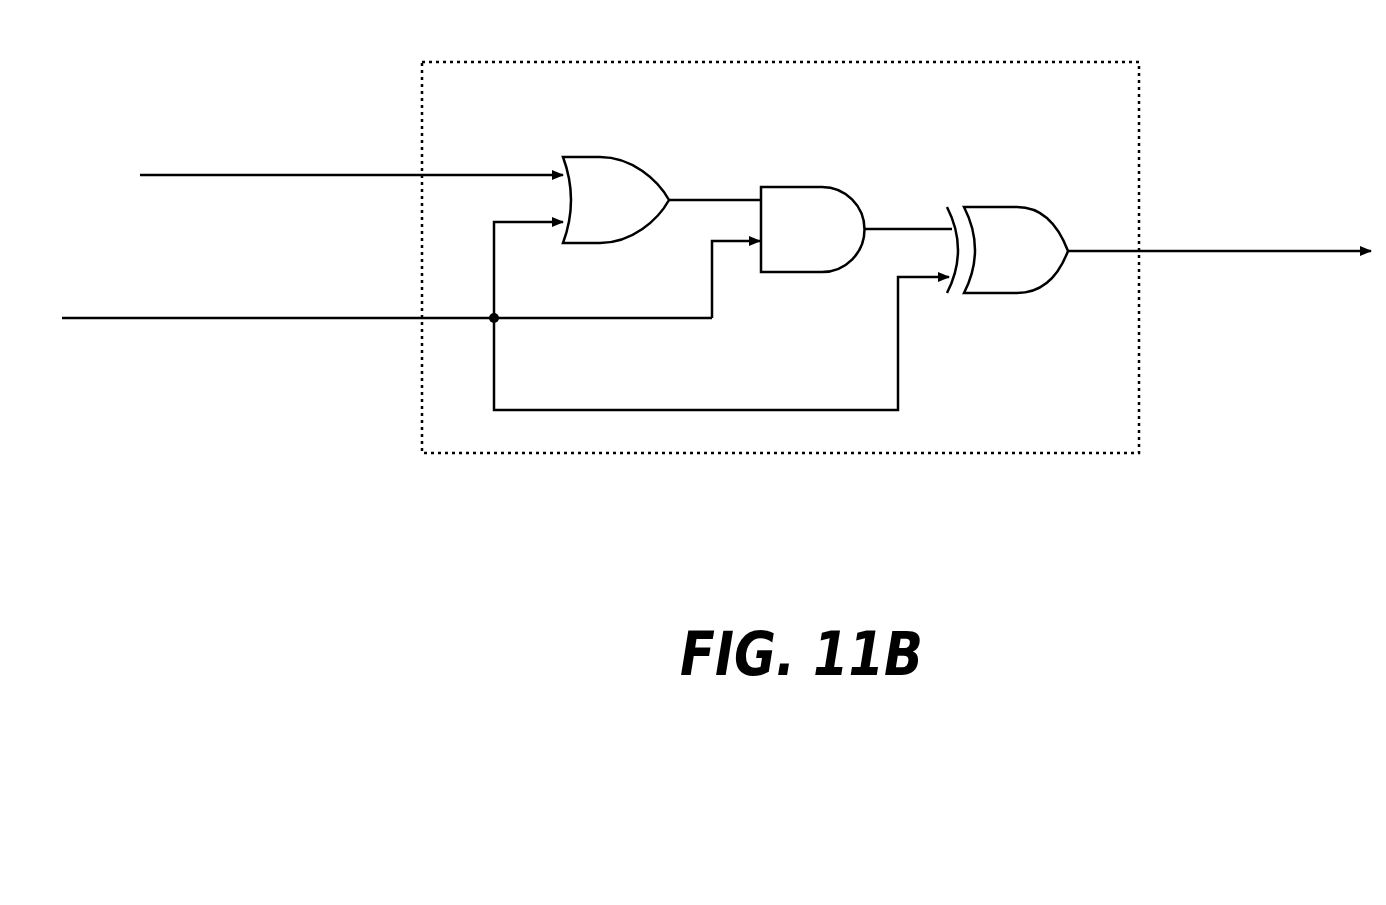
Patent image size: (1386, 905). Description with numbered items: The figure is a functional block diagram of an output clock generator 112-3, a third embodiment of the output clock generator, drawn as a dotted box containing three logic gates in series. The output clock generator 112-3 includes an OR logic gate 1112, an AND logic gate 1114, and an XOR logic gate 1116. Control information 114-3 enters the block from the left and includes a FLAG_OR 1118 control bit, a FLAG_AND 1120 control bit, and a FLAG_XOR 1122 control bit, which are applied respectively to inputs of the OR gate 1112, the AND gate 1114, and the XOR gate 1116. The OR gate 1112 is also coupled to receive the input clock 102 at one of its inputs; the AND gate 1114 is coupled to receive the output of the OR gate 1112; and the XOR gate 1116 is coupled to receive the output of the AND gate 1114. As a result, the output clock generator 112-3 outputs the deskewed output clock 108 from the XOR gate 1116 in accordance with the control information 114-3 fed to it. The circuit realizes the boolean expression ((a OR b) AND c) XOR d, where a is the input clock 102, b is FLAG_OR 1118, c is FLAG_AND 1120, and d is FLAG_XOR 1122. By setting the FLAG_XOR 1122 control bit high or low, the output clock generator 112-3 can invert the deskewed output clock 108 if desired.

The input clock 102 is at (380, 146).
The control information 114-3 is at (309, 317).
The output clock generator 112-3 is at (479, 460).
The OR logic gate 1112 is at (612, 153).
The AND logic gate 1114 is at (798, 185).
The XOR logic gate 1116 is at (1002, 206).
The FLAG_OR control bit 1118 is at (512, 224).
The FLAG_AND control bit 1120 is at (698, 320).
The FLAG_XOR control bit 1122 is at (900, 332).
The deskewed output clock 108 is at (1252, 285).